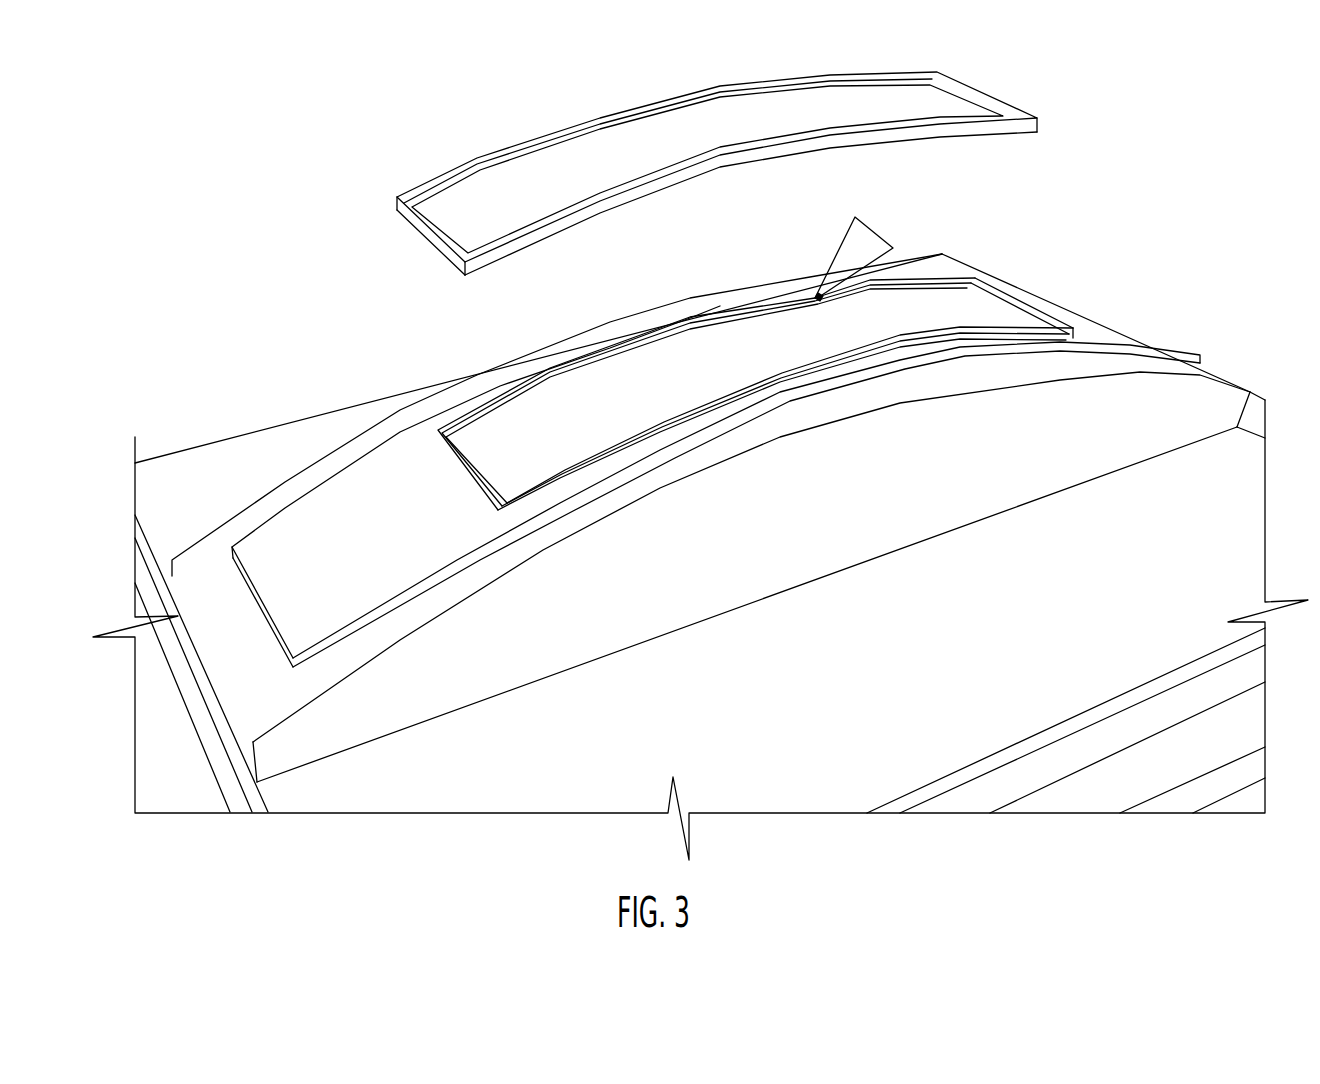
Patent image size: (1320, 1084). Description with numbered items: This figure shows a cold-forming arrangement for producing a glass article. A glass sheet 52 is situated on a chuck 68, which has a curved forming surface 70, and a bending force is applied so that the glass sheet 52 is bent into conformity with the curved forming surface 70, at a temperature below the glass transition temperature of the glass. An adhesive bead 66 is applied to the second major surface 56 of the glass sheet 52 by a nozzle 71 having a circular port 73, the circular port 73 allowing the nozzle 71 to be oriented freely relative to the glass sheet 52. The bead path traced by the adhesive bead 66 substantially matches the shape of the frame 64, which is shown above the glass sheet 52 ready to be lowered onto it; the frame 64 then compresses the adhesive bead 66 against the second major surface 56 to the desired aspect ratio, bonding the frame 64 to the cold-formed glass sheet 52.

The glass sheet 52 is at (960, 310).
The second major surface 56 is at (605, 411).
The frame 64 is at (477, 158).
The adhesive bead 66 is at (1073, 327).
The chuck 68 is at (820, 513).
The curved forming surface 70 is at (353, 520).
The nozzle 71 is at (886, 242).
The circular port 73 is at (806, 291).